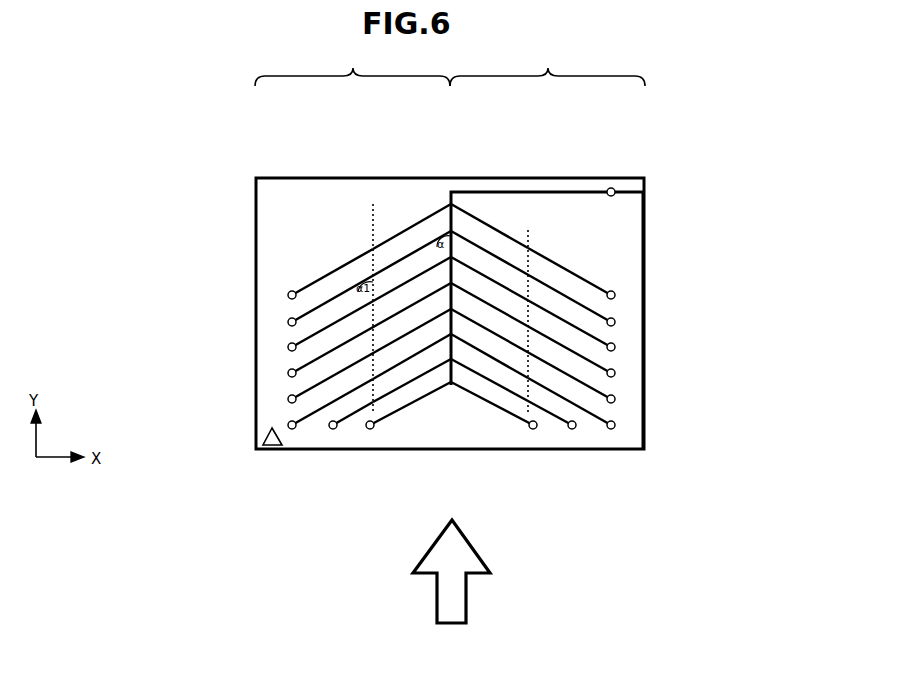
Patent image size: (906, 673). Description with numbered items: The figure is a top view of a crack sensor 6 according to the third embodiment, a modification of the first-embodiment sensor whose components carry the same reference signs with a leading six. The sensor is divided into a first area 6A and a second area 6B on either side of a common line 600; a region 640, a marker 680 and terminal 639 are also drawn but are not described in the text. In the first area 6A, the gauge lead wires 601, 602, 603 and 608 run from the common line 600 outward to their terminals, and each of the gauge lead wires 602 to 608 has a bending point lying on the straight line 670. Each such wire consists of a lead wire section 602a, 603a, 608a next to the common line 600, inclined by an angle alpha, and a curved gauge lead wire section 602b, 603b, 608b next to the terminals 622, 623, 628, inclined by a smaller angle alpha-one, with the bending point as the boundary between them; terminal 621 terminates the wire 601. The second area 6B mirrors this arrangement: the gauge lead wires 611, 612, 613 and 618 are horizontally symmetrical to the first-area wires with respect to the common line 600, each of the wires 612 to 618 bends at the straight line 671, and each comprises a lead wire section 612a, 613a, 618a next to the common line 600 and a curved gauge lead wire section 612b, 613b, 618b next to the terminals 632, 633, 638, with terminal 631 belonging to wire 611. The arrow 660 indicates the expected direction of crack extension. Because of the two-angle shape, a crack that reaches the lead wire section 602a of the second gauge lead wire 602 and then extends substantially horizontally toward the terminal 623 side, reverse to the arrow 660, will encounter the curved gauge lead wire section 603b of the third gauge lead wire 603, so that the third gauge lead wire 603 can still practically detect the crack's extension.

The crack sensor 6 is at (450, 291).
The first area 6A is at (352, 67).
The second area 6B is at (547, 64).
The common line 600 is at (547, 292).
The substrate region 640 is at (466, 160).
The straight line 670 is at (414, 255).
The straight line 671 is at (590, 257).
The gauge lead wire 608 is at (292, 228).
The lead wire section 608a is at (412, 222).
The curved gauge lead wire section 608b is at (332, 272).
The terminal 628 is at (312, 276).
The third gauge lead wire 603 is at (273, 373).
The lead wire section 603a is at (412, 354).
The curved gauge lead wire section 603b is at (332, 398).
The second gauge lead wire 602 is at (363, 454).
The lead wire section 602a is at (412, 378).
The curved gauge lead wire section 602b is at (347, 408).
The gauge lead wire 601 is at (399, 461).
The gauge lead wire 618 is at (610, 232).
The lead wire section 618a is at (489, 217).
The curved gauge lead wire section 618b is at (576, 268).
The gauge lead wire 613 is at (629, 373).
The lead wire section 613a is at (489, 350).
The curved gauge lead wire section 613b is at (569, 393).
The gauge lead wire 612 is at (549, 454).
The lead wire section 612a is at (489, 373).
The curved gauge lead wire section 612b is at (556, 403).
The gauge lead wire 611 is at (503, 462).
The terminal 621 is at (348, 466).
The terminal 622 is at (297, 465).
The terminal 623 is at (232, 408).
The terminal 631 is at (557, 470).
The terminal 632 is at (616, 460).
The terminal 633 is at (673, 408).
The terminal 638 is at (672, 276).
The terminal 639 is at (671, 170).
The alignment mark 680 is at (221, 451).
The arrow 660 is at (485, 571).